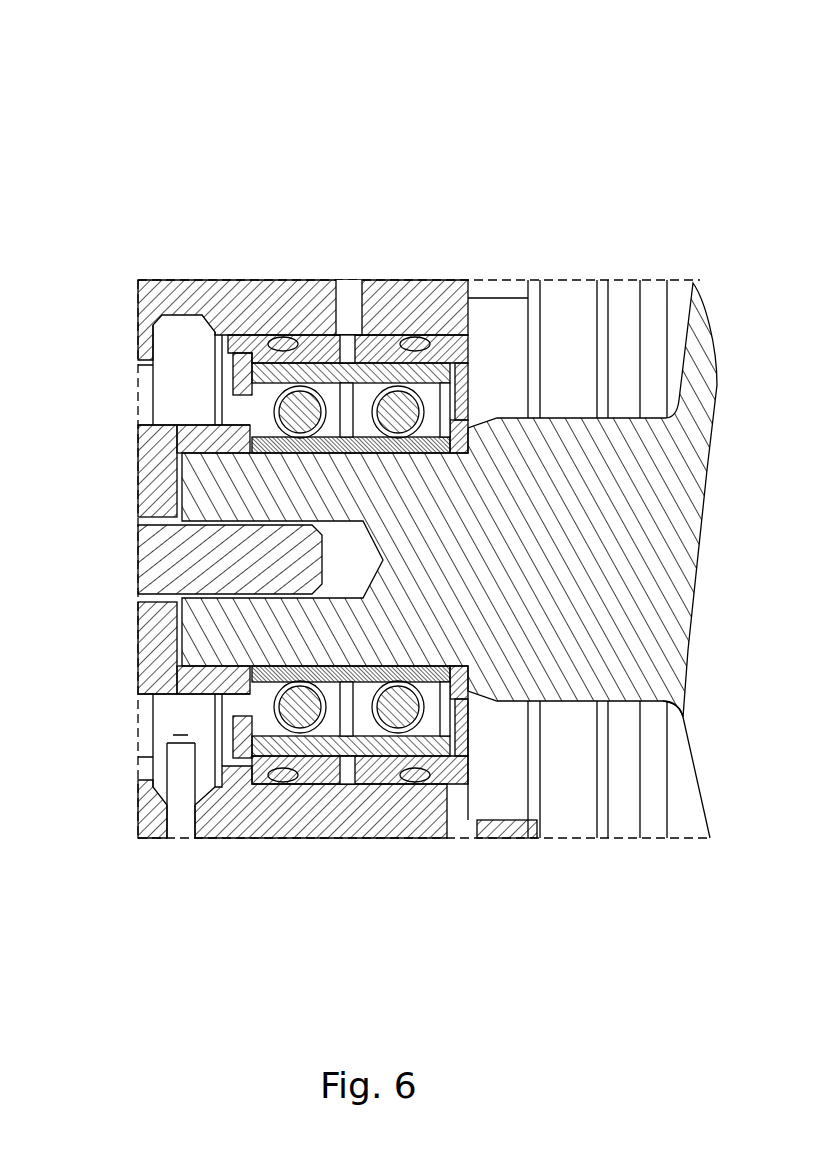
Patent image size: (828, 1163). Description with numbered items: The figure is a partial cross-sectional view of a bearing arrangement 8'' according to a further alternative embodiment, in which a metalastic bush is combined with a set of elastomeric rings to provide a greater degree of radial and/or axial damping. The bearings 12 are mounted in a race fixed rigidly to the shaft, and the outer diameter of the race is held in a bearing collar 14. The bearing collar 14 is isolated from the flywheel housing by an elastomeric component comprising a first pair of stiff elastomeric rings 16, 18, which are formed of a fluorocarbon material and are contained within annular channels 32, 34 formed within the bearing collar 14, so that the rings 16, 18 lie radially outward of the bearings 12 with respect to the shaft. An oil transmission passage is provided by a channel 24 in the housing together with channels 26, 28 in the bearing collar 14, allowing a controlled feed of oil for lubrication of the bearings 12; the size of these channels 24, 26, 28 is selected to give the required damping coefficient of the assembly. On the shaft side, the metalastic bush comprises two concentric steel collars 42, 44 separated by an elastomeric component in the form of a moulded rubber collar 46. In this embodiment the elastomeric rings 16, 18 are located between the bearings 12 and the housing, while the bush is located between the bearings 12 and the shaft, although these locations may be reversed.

The bearing arrangement 8'' is at (425, 420).
The bearings 12 is at (396, 388).
The bearing collar 14 is at (467, 348).
The elastomeric ring 16 is at (278, 337).
The elastomeric ring 18 is at (437, 300).
The channel 24 is at (348, 328).
The channel 26 is at (349, 345).
The channel 28 is at (357, 788).
The annular channel 32 is at (227, 290).
The annular channel 34 is at (469, 345).
The steel collar 42 is at (248, 660).
The steel collar 44 is at (240, 692).
The moulded rubber collar 46 is at (150, 663).